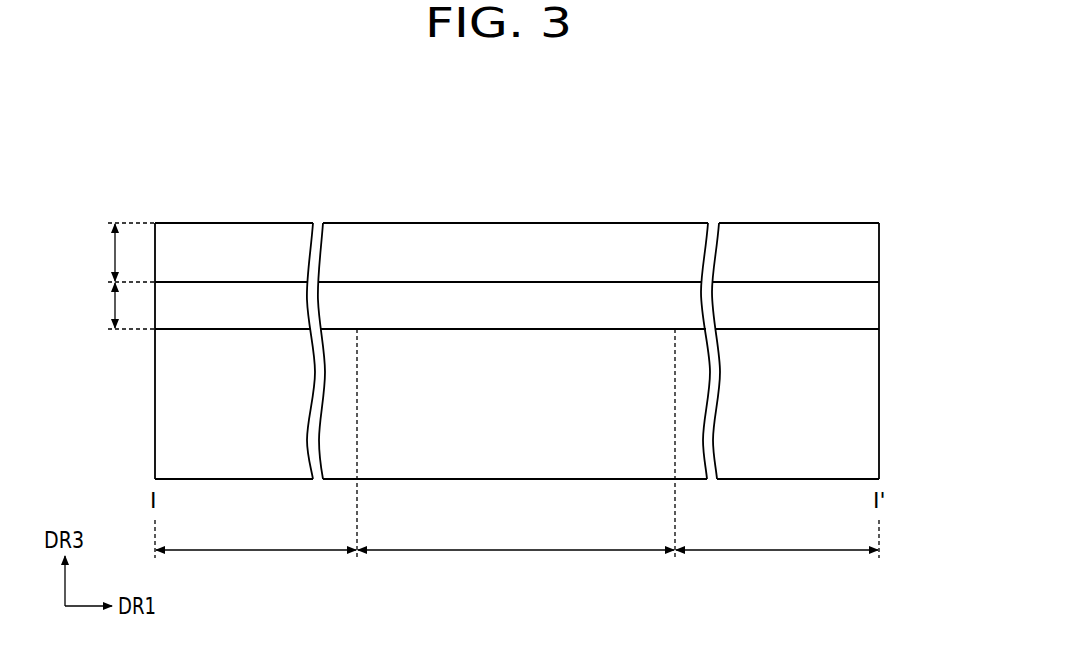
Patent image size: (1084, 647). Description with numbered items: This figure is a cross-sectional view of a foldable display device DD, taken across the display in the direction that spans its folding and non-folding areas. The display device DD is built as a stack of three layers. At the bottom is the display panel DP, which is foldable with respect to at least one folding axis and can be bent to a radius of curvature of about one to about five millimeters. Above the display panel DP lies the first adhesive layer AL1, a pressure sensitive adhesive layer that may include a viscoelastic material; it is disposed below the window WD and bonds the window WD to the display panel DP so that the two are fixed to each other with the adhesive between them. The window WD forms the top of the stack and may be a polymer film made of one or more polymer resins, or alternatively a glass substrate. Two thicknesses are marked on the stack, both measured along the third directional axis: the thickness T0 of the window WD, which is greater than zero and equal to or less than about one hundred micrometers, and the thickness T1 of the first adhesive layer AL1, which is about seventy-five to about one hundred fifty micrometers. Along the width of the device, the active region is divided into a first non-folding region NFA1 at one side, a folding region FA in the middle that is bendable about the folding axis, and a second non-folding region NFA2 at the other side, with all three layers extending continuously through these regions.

The display device DD is at (819, 145).
The window WD is at (867, 251).
The first adhesive layer AL1 is at (867, 306).
The display panel DP is at (867, 398).
The thickness of the window T0 is at (120, 252).
The thickness of the first adhesive layer T1 is at (120, 306).
The non-folding region NFA1 is at (255, 549).
The folding region FA is at (516, 453).
The non-folding region NFA2 is at (777, 549).